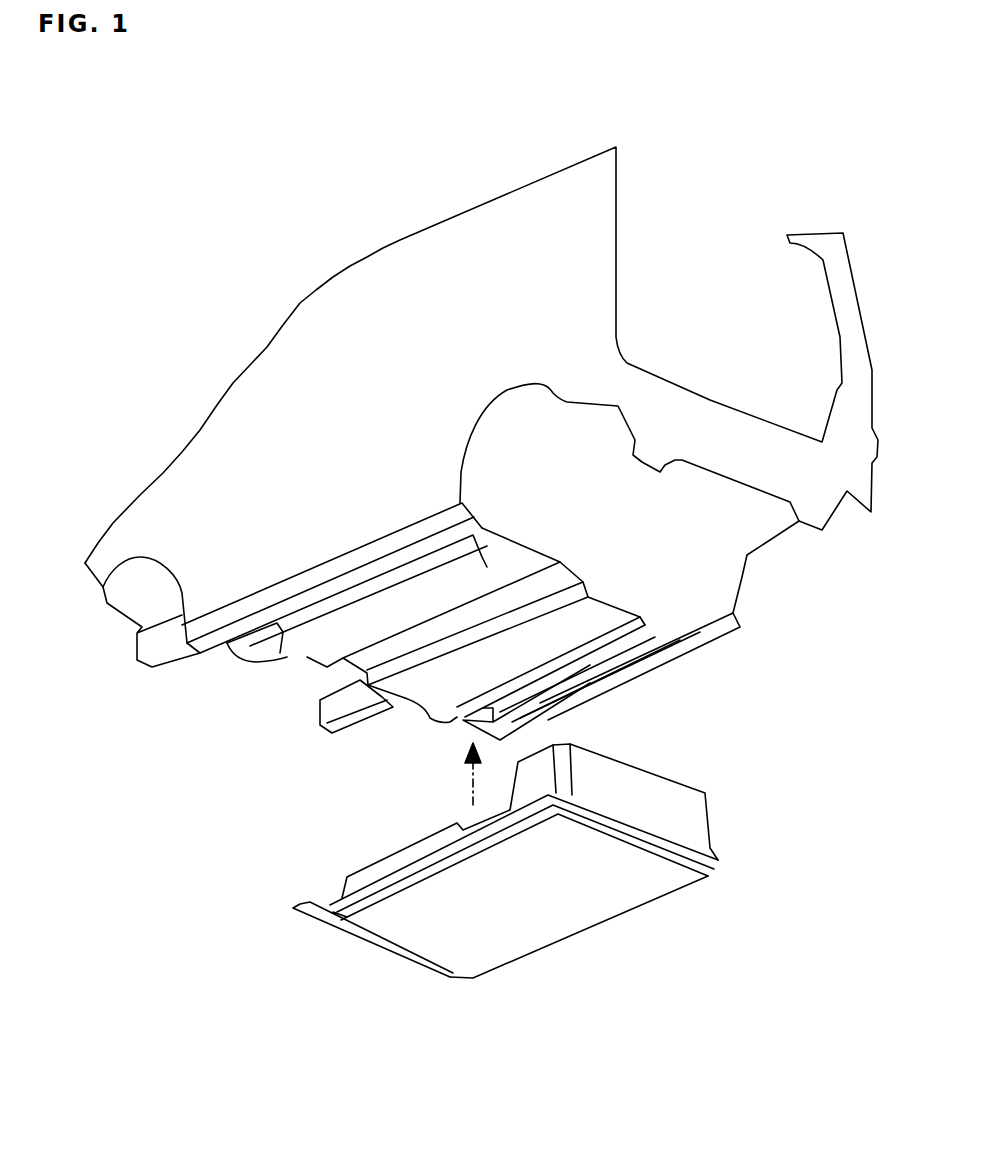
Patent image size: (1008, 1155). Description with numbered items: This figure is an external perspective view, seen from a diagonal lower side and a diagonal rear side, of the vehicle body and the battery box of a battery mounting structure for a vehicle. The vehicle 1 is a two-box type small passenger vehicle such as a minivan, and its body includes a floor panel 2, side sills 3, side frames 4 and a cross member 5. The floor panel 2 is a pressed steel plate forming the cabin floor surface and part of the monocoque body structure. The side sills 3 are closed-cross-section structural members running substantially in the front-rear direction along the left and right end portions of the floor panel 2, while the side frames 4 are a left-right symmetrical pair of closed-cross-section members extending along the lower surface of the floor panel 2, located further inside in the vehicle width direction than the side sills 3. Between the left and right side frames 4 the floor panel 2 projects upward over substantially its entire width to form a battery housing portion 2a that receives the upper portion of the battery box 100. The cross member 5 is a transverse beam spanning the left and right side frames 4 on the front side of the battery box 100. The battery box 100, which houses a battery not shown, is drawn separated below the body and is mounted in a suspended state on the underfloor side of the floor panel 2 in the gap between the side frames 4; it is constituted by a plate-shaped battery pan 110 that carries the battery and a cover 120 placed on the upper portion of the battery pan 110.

The vehicle 1 is at (208, 325).
The floor panel 2 is at (640, 647).
The battery housing portion 2a is at (628, 643).
The side sills 3 is at (718, 631).
The side frames 4 is at (493, 688).
The cross member 5 is at (300, 910).
The battery box 100 is at (615, 861).
The battery pan 110 is at (663, 882).
The cover 120 is at (673, 807).